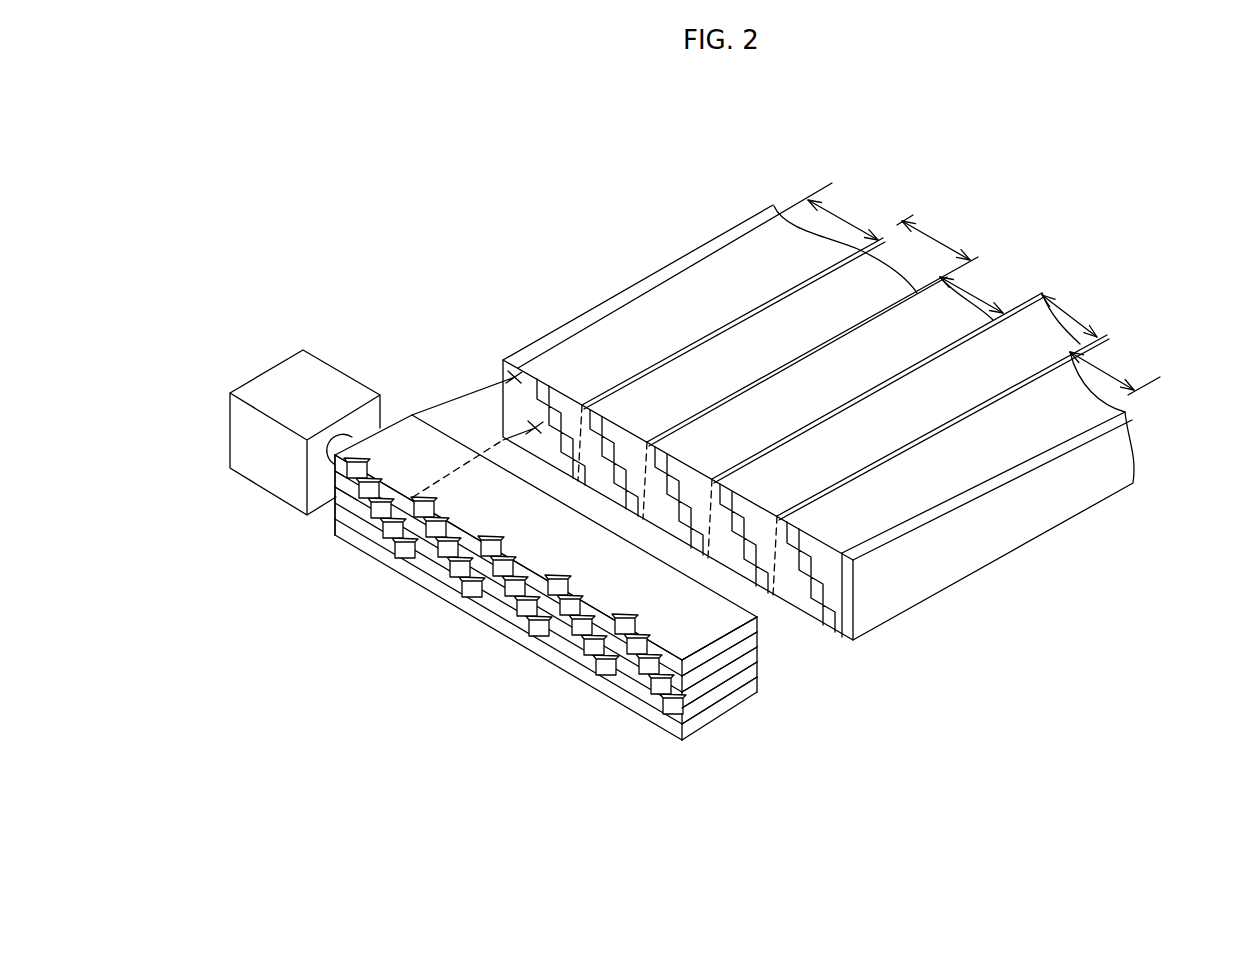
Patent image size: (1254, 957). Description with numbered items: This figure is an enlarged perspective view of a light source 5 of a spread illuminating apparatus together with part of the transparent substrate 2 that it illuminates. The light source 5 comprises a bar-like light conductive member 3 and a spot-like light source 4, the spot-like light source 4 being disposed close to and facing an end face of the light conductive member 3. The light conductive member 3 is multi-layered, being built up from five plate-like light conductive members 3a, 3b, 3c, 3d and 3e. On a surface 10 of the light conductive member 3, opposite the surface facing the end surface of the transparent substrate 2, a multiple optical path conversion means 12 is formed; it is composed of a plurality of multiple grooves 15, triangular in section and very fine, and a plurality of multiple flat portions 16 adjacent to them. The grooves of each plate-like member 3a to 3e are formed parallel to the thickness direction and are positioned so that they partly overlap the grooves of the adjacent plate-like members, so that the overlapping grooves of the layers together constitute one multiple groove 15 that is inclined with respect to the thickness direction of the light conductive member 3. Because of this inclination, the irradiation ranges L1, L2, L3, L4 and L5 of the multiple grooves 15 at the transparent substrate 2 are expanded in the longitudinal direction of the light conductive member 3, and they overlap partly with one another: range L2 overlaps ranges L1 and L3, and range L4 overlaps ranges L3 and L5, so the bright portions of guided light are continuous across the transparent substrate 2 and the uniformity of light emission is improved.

The transparent substrate 2 is at (645, 279).
The light conductive member 3 is at (402, 427).
The plate-like light conductive member 3a is at (758, 628).
The plate-like light conductive member 3b is at (758, 643).
The plate-like light conductive member 3c is at (758, 660).
The plate-like light conductive member 3d is at (758, 675).
The plate-like light conductive member 3e is at (758, 690).
The spot-like light source 4 is at (325, 398).
The light source 5 is at (438, 285).
The surface 10 is at (357, 510).
The multiple optical path conversion means 12 is at (520, 682).
The multiple groove 15 is at (400, 573).
The multiple flat portion 16 is at (433, 587).
The irradiation range L1 is at (848, 222).
The irradiation range L2 is at (942, 256).
The irradiation range L3 is at (978, 300).
The irradiation range L4 is at (1066, 332).
The irradiation range L5 is at (1108, 378).